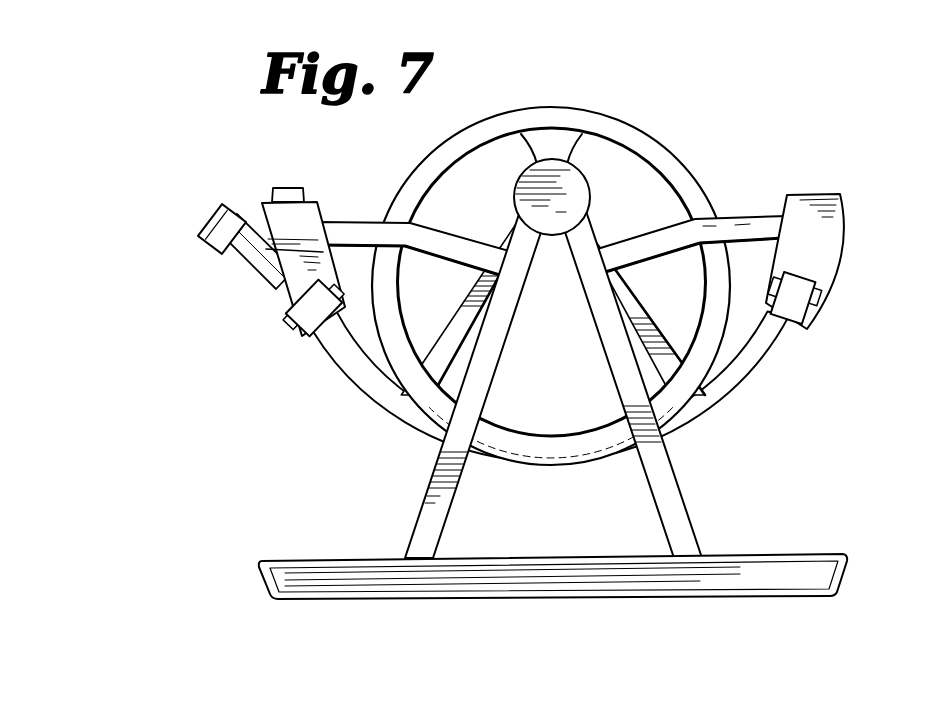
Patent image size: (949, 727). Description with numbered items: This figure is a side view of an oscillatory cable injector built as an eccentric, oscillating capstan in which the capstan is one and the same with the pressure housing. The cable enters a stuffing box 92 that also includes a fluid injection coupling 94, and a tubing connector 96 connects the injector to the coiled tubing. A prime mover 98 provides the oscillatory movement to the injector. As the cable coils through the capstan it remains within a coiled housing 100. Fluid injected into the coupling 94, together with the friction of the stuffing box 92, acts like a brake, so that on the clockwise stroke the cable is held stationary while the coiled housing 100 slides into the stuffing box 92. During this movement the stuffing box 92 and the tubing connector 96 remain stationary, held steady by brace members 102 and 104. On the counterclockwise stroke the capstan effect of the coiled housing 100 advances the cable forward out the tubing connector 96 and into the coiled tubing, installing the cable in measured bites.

The stuffing box 92 is at (318, 213).
The fluid injection coupling 94 is at (252, 268).
The tubing connector 96 is at (820, 233).
The prime mover 98 is at (593, 190).
The coiled housing 100 is at (727, 388).
The brace member 102 is at (458, 246).
The brace member 104 is at (657, 232).